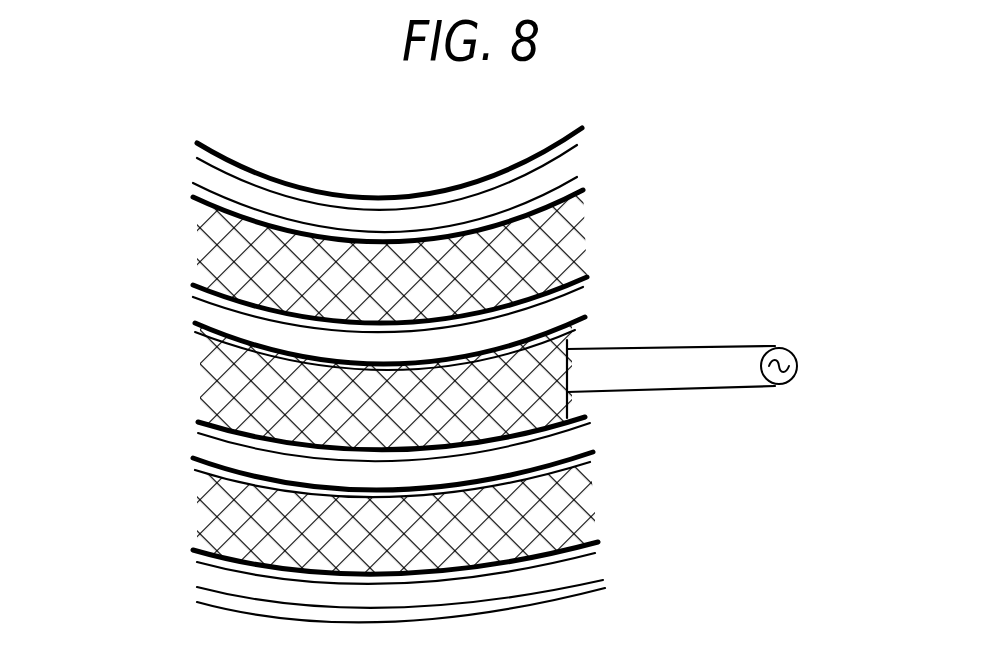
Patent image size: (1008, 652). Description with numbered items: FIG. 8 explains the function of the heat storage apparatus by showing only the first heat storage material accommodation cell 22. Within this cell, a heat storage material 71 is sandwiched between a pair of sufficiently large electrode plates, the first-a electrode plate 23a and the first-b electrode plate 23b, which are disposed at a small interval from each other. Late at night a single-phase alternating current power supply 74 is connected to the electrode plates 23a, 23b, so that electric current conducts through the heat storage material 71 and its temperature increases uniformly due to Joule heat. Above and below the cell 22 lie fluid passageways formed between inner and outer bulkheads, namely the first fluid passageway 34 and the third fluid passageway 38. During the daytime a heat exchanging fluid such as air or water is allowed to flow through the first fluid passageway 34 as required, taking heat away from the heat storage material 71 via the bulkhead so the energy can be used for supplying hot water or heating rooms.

The third fluid passageway 38 is at (203, 313).
The first heat storage material accommodation cell 22 is at (405, 390).
The first-a electrode plate 23a is at (587, 411).
The first-b electrode plate 23b is at (587, 323).
The heat storage material 71 is at (462, 394).
The single-phase alternating current power supply 74 is at (798, 357).
The first fluid passageway 34 is at (215, 450).